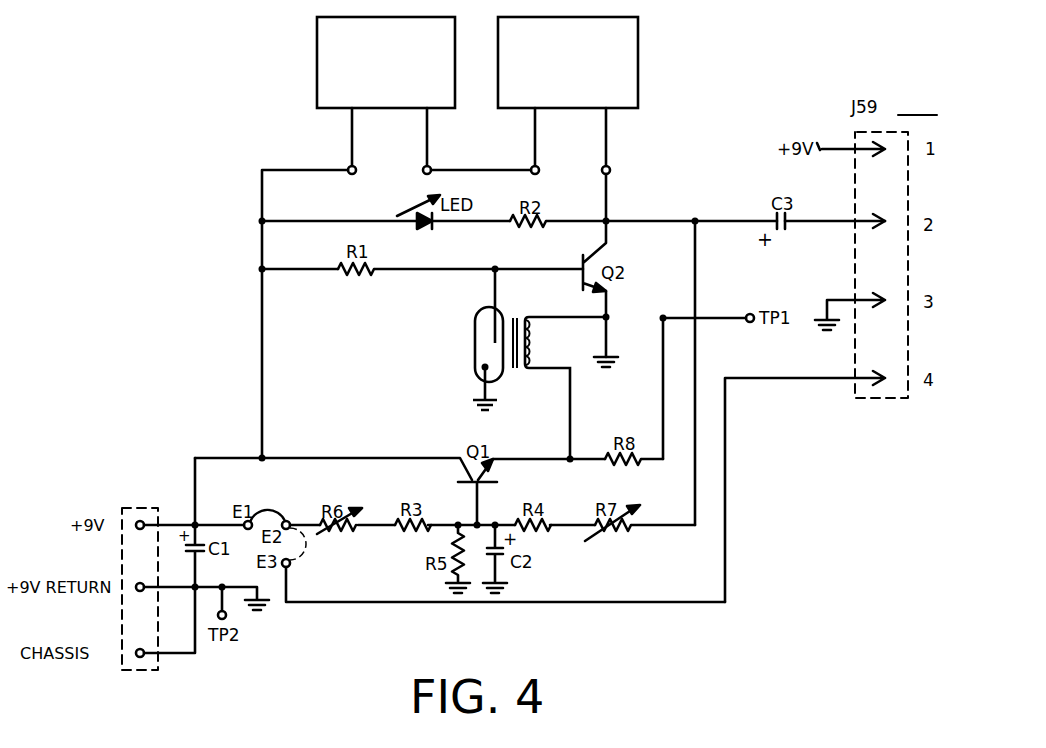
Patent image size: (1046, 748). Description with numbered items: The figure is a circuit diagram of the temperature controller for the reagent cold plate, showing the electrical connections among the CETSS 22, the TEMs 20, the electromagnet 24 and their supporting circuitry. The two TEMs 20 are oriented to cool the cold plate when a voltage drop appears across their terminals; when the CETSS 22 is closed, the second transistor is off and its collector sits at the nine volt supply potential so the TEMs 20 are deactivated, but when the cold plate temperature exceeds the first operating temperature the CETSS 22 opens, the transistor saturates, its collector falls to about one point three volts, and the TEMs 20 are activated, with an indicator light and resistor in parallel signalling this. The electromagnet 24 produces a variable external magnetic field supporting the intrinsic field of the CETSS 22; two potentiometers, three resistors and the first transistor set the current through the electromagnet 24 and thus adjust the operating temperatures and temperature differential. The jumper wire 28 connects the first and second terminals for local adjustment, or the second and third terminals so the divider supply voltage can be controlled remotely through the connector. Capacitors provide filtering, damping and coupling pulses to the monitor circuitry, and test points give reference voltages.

The thermoelectric modules (TEMs) 20 is at (317, 58).
The CETSS 22 is at (475, 341).
The electromagnet 24 is at (532, 344).
The jumper wire 28 is at (270, 507).